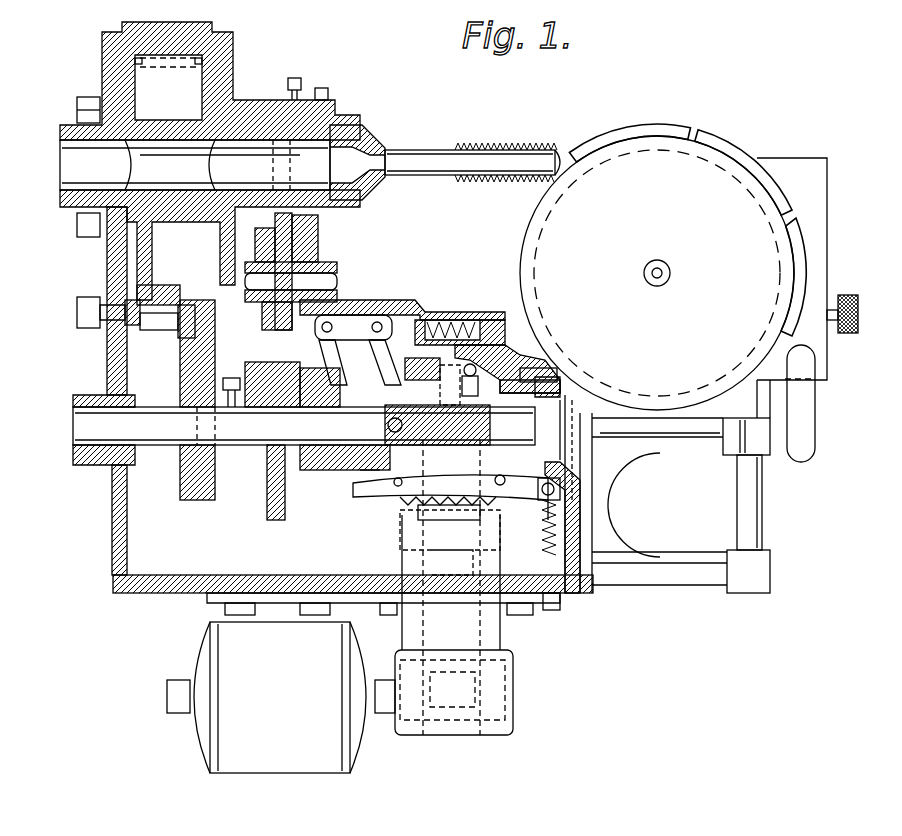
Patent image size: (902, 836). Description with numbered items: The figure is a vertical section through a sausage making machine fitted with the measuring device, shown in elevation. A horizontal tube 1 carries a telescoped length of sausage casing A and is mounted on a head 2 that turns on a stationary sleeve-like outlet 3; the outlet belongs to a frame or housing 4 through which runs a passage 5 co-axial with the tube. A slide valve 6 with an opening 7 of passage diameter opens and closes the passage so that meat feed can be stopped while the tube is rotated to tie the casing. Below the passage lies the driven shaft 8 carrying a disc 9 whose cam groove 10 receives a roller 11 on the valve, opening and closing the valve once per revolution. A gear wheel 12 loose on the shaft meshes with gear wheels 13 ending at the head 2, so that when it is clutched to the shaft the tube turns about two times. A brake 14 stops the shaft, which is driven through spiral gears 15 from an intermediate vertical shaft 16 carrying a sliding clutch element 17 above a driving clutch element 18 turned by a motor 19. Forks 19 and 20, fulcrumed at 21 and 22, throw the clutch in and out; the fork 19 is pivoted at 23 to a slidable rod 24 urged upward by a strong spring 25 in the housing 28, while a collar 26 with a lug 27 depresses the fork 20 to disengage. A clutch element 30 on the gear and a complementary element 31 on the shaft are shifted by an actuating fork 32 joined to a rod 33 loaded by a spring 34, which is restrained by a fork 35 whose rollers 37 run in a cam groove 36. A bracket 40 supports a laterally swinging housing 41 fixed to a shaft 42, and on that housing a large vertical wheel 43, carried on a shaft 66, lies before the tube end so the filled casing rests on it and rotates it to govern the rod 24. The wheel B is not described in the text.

The horizontal tube 1 is at (452, 150).
The head 2 is at (355, 120).
The sleeve-like outlet 3 is at (340, 110).
The frame or housing 4 is at (238, 98).
The passage 5 is at (70, 163).
The valve 6 is at (205, 195).
The opening 7 is at (220, 159).
The driven shaft 8 is at (152, 410).
The disc 9 is at (215, 345).
The cam groove 10 is at (185, 480).
The roller 11 is at (186, 287).
The gear wheel 12 is at (270, 490).
The gear wheels 13 is at (318, 238).
The brake 14 is at (505, 382).
The spiral gears 15 is at (448, 385).
The intermediate vertical shaft 16 is at (548, 385).
The clutch element 17 is at (400, 513).
The driving clutch element 18 is at (405, 545).
The motor / operating fork 19 is at (508, 515).
The operating fork 20 is at (395, 480).
The fulcrum 21 is at (511, 470).
The fulcrum 22 is at (405, 497).
The pivotal connection 23 is at (575, 480).
The vertically-slidable rod 24 is at (560, 495).
The spring 25 is at (565, 565).
The disc or collar 26 is at (352, 475).
The lug 27 is at (336, 486).
The frame or housing 28 is at (572, 430).
The clutch element 30 is at (262, 368).
The clutch element 31 is at (292, 370).
The actuating fork 32 is at (344, 359).
The rod 33 is at (360, 320).
The spring 34 is at (455, 318).
The fork 35 is at (392, 359).
The cam groove 36 is at (422, 363).
The rollers 37 is at (425, 425).
The bracket 40 is at (620, 560).
The housing 41 is at (827, 249).
The shaft 42 is at (770, 496).
The vertical wheel 43 is at (713, 175).
The shaft 66 is at (661, 272).
The sausage casing A is at (545, 143).
The wheel B is at (668, 125).